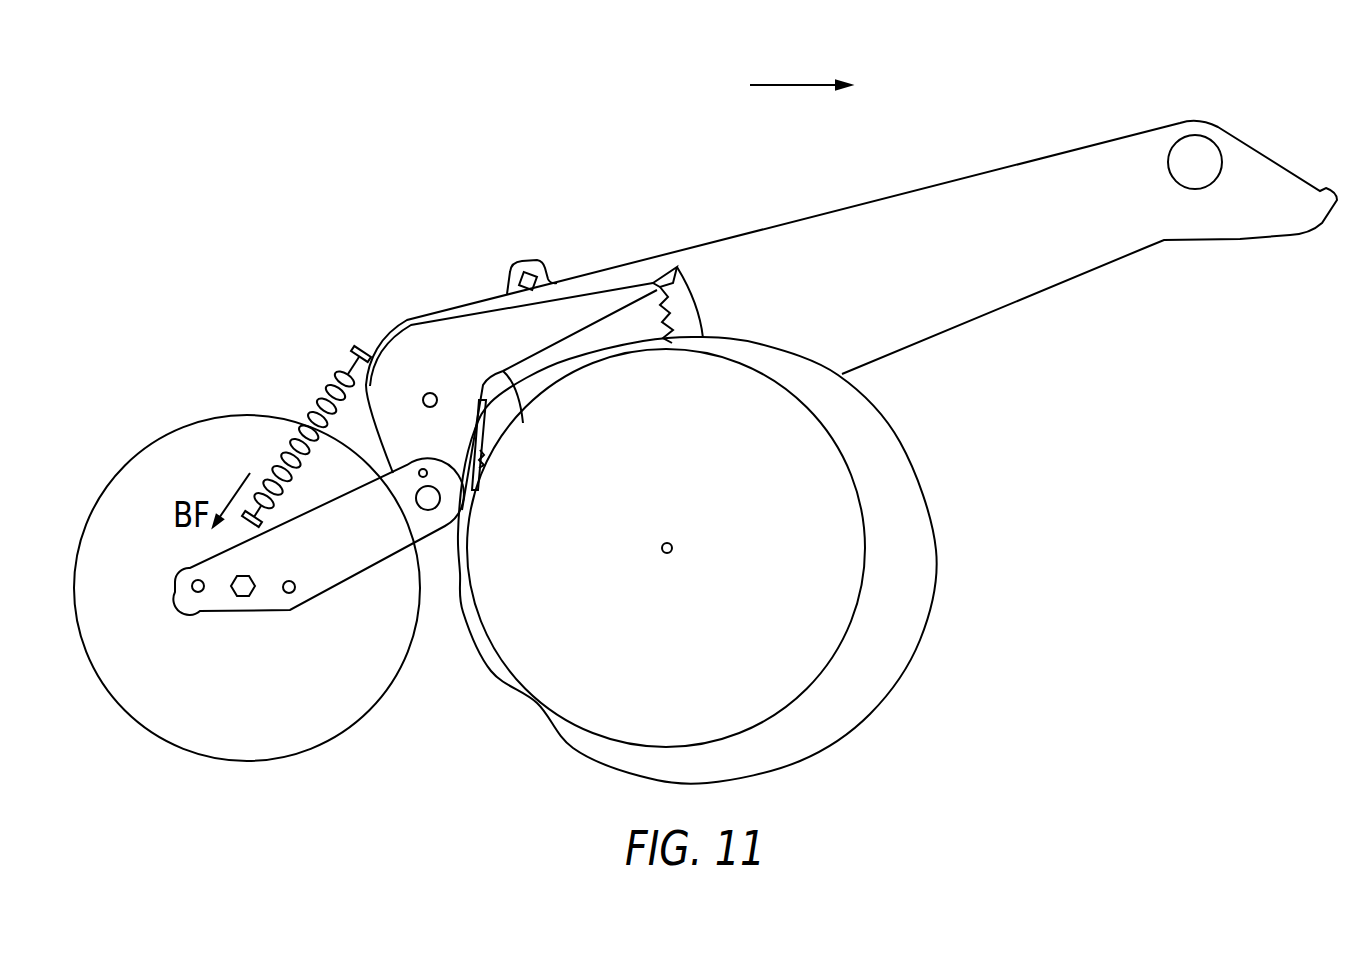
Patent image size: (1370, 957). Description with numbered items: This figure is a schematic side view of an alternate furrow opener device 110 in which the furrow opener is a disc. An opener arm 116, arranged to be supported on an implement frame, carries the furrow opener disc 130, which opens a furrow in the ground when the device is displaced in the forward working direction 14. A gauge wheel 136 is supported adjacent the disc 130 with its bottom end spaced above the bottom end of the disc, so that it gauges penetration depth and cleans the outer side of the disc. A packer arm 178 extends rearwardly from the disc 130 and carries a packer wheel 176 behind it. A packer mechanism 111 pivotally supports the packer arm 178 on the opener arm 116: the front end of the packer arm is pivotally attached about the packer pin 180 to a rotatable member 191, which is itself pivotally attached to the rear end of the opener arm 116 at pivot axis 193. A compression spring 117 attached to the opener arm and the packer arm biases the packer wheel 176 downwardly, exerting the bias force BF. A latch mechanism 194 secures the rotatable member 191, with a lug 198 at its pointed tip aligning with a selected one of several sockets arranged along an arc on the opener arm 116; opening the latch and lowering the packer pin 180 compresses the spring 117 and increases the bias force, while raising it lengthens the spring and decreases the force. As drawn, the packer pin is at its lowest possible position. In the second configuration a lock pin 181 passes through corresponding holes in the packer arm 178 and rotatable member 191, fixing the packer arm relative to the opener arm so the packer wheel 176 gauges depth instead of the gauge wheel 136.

The forward working direction 14 is at (793, 83).
The furrow opener device 110 is at (481, 353).
The packer mechanism 111 is at (442, 292).
The opener arm 116 is at (1005, 306).
The compression spring 117 is at (318, 403).
The furrow opener disc 130 is at (933, 585).
The gauge wheel 136 is at (865, 513).
The packer wheel 176 is at (175, 435).
The packer arm 178 is at (362, 575).
The packer pin 180 is at (433, 503).
The lock pin 181 is at (420, 475).
The rotatable member 191 is at (523, 423).
The pivot axis 193 is at (433, 393).
The latch mechanism 194 is at (403, 317).
The lug 198 is at (677, 267).